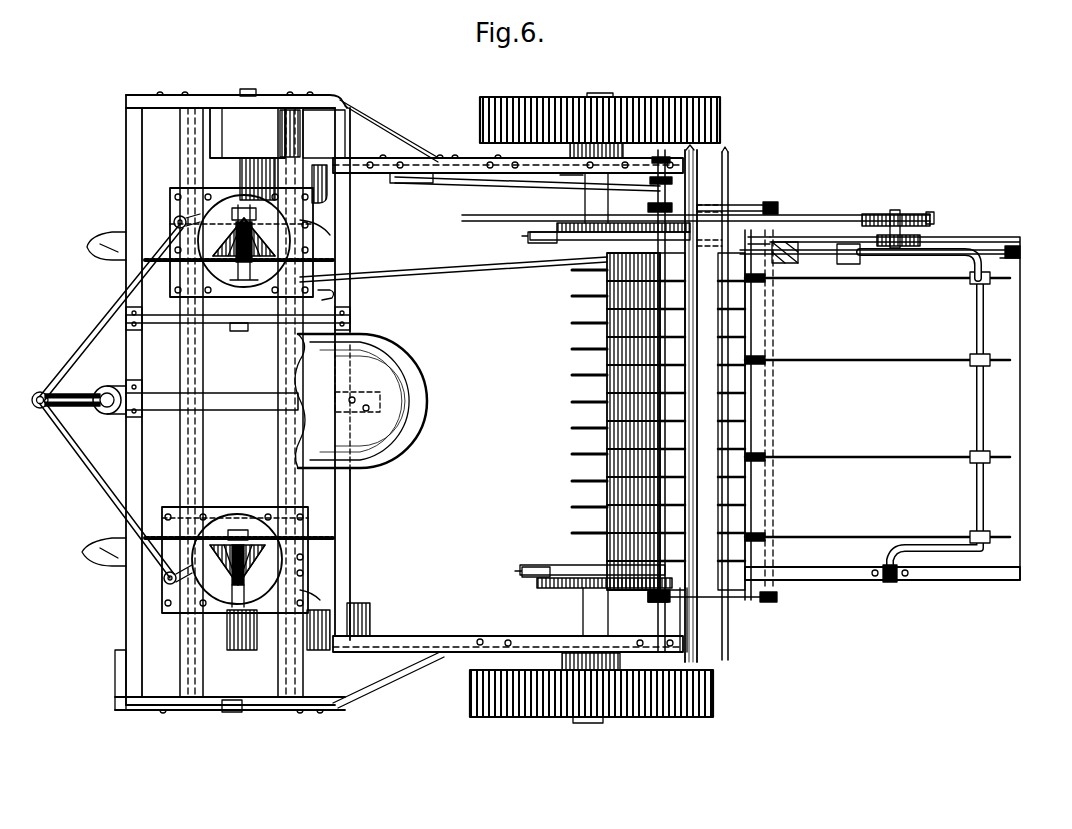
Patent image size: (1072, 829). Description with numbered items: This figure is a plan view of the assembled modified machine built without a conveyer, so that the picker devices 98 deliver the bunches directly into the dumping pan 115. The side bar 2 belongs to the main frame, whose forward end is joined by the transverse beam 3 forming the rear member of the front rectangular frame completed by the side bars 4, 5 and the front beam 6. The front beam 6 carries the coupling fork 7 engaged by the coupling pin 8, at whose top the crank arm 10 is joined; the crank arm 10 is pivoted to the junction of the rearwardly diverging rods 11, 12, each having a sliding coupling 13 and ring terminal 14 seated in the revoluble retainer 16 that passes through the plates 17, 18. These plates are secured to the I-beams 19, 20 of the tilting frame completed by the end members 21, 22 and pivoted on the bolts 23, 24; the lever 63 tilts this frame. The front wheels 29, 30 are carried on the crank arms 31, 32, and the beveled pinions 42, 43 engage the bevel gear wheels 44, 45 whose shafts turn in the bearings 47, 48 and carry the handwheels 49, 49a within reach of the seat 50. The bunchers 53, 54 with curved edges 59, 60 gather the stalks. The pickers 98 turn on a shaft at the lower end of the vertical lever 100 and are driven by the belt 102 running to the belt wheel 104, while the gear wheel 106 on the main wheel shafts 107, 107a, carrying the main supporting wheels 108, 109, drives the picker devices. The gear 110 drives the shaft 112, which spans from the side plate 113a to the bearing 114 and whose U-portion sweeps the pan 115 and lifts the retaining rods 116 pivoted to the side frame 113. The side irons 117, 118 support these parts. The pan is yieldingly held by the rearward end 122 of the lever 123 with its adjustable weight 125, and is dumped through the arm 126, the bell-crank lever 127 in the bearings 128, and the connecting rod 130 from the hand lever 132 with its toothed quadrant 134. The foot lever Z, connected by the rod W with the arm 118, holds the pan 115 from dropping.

The side bar 2 is at (452, 637).
The transverse beam 3 is at (350, 493).
The side bar of front frame 4 is at (193, 108).
The side bar of front frame 5 is at (110, 347).
The front transverse beam 6 is at (128, 450).
The coupling fork 7 is at (114, 386).
The coupling pin 8 is at (101, 409).
The crank arm 10 is at (60, 408).
The rod 11 is at (96, 328).
The rod 12 is at (97, 474).
The sliding coupling 13 is at (176, 220).
The ring terminal 14 is at (182, 230).
The revoluble guide or retainer 16 is at (228, 200).
The plate 17 is at (313, 224).
The plate 18 is at (310, 518).
The transverse I-beam 19 is at (205, 443).
The transverse I-beam 20 is at (280, 440).
The end member of tilting frame 21 is at (270, 107).
The end member of tilting frame 22 is at (258, 705).
The pivot bolt 23 is at (240, 110).
The pivot bolt 24 is at (232, 712).
The front wheel 29 is at (328, 190).
The front wheel 30 is at (370, 612).
The crank arm 31 is at (318, 226).
The crank arm 32 is at (313, 597).
The beveled pinion 42 is at (268, 240).
The beveled pinion 43 is at (235, 595).
The bevel gear wheel 44 is at (243, 282).
The bevel gear wheel 45 is at (250, 545).
The bearing 47 is at (240, 208).
The bearing 48 is at (278, 642).
The handwheel 49 is at (335, 259).
The handwheel 49a is at (335, 540).
The seat 50 is at (426, 420).
The bunch-guiding device 53 is at (110, 245).
The bunch-guiding device 54 is at (97, 553).
The curved edge 59 is at (106, 258).
The curved edge 60 is at (103, 543).
The lever 63 is at (245, 331).
The picker devices 98 is at (575, 410).
The vertical lever 100 is at (660, 212).
The driving belt 102 is at (850, 214).
The belt wheel 104 is at (922, 214).
The gear wheel 106 is at (560, 225).
The main wheel shaft 107 is at (600, 92).
The main wheel shaft 107a is at (590, 723).
The main supporting wheel 108 is at (680, 97).
The main supporting wheel 109 is at (668, 716).
The gear 110 is at (922, 240).
The shaft 112 is at (976, 323).
The side frame 113 is at (757, 410).
The vertical side plate 113a is at (885, 258).
The bearing 114 is at (900, 580).
The dumping pan 115 is at (882, 408).
The bunch guards or retaining rods 116 is at (852, 362).
The side iron 117 is at (752, 240).
The side iron 118 is at (722, 603).
The rearward end of lever 122 is at (1021, 255).
The lever 123 is at (1020, 264).
The adjustable weight 125 is at (795, 265).
The arm 126 is at (745, 205).
The bell-crank lever 127 is at (700, 172).
The bearing 128 is at (606, 336).
The connecting rod 130 is at (478, 190).
The hand lever 132 is at (397, 175).
The toothed quadrant 134 is at (433, 184).
The rod W is at (500, 268).
The foot lever Z is at (332, 295).